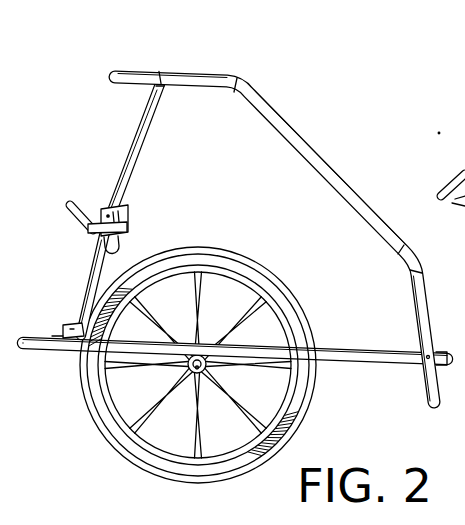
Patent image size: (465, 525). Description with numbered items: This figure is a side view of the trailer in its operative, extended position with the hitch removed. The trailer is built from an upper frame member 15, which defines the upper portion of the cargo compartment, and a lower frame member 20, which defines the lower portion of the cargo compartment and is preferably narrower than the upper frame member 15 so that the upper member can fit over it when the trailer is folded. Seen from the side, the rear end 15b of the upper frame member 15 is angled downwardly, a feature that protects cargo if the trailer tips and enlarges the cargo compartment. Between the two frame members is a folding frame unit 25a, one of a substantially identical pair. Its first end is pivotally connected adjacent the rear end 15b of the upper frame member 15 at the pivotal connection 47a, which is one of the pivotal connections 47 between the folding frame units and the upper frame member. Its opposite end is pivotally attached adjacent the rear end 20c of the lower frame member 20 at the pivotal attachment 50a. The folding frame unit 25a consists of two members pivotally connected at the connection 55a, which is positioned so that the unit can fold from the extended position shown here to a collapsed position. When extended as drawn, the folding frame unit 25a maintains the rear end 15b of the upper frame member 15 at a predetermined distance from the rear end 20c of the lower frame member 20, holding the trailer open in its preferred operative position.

The upper frame member 15 is at (300, 147).
The rear end 15b is at (130, 70).
The lower frame member 20 is at (387, 352).
The rear end 20c is at (40, 347).
The folding frame unit 25a is at (138, 152).
The pivotal connection 47 is at (464, 126).
The pivotal connection 47a is at (163, 80).
The pivotal attachment 50a is at (78, 330).
The pivotal connection 55a is at (127, 221).